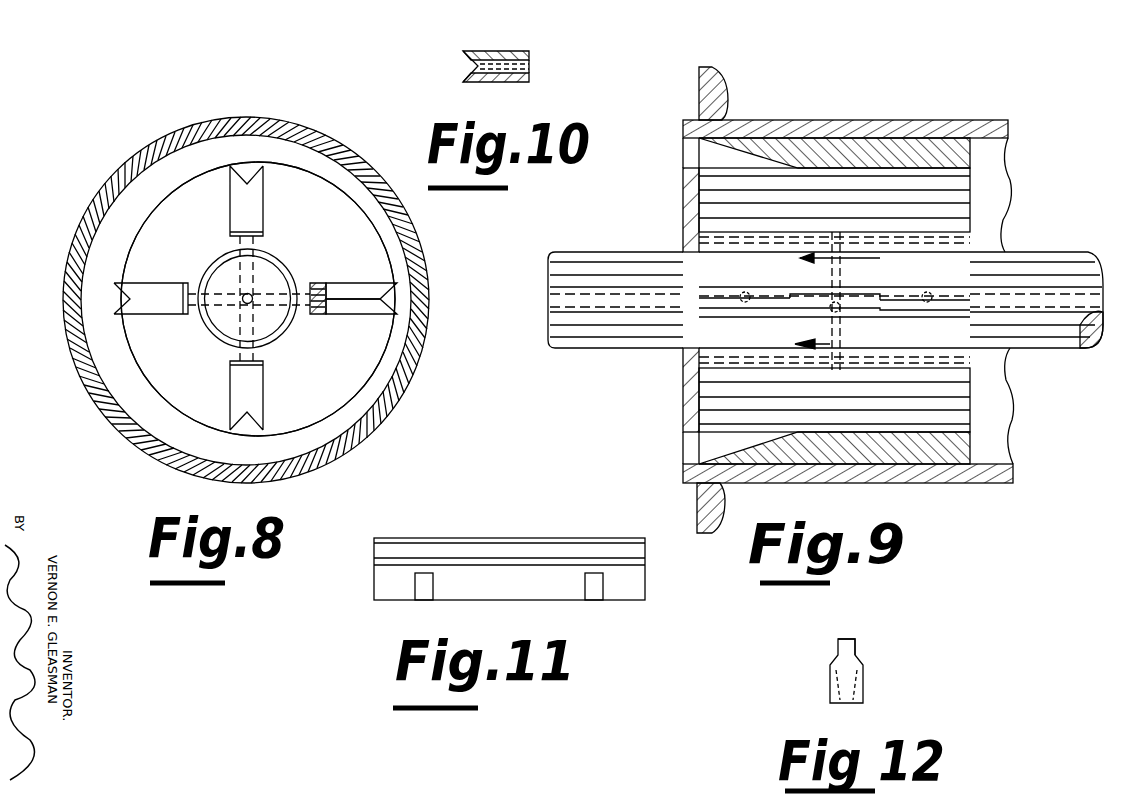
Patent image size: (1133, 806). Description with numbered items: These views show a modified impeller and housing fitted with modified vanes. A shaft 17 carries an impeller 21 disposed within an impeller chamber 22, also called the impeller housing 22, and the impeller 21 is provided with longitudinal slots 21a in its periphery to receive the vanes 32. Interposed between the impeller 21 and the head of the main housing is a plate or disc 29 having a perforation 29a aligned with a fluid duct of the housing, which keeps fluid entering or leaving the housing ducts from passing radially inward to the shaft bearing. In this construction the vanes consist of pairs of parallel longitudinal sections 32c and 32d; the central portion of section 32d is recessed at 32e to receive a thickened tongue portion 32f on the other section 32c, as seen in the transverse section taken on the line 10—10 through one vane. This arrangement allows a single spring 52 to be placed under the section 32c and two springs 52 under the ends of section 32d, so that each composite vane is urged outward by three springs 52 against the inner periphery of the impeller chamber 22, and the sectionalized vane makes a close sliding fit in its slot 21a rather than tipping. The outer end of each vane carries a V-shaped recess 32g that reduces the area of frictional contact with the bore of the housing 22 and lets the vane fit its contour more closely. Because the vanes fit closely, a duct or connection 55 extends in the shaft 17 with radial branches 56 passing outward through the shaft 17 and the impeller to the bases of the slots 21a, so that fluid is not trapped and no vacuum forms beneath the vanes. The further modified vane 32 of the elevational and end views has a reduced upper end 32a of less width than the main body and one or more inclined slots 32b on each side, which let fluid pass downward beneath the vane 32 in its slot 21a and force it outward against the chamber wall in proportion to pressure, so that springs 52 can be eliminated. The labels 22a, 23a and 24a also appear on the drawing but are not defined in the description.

In FIG. 9, the section line 10 is at (856, 307).
In FIG. 8, the shaft 17 is at (222, 243).
In FIG. 9, the shaft 17 is at (1048, 268).
In FIG. 8, the impeller 21 is at (175, 222).
In FIG. 9, the impeller 21 is at (958, 198).
In FIG. 8, the longitudinal slots 21a is at (228, 392).
In FIG. 8, the impeller chamber 22 is at (412, 362).
In FIG. 9, the impeller chamber 22 is at (866, 126).
In FIG. 8, the housing chamber 22a is at (372, 362).
In FIG. 9, the housing end wall portion 23a is at (727, 163).
In FIG. 9, the housing end wall portion 24a is at (730, 445).
In FIG. 9, the plate or disc 29 is at (688, 192).
In FIG. 9, the perforation 29a is at (690, 152).
In FIG. 11, the vane 32 is at (498, 576).
In FIG. 12, the vane 32 is at (860, 652).
In FIG. 11, the reduced outer end 32a is at (455, 550).
In FIG. 12, the reduced outer end 32a is at (838, 645).
In FIG. 11, the inclined slot 32b is at (432, 585).
In FIG. 12, the inclined slot 32b is at (832, 690).
In FIG. 9, the vane section 32c is at (910, 311).
In FIG. 10, the vane section 32c is at (470, 78).
In FIG. 8, the vane section 32d is at (345, 314).
In FIG. 9, the vane section 32d is at (895, 300).
In FIG. 10, the vane section 32d is at (495, 52).
In FIG. 8, the recess 32e is at (348, 295).
In FIG. 9, the recess 32e is at (812, 298).
In FIG. 9, the thickened tongue portion 32f is at (802, 306).
In FIG. 8, the V-shaped recess 32g is at (115, 293).
In FIG. 10, the V-shaped recess 32g is at (470, 62).
In FIG. 8, the spring 52 is at (318, 288).
In FIG. 9, the spring 52 is at (745, 296).
In FIG. 8, the duct 55 is at (244, 297).
In FIG. 9, the duct 55 is at (592, 300).
In FIG. 8, the radial branches 56 is at (250, 270).
In FIG. 9, the radial branches 56 is at (841, 270).